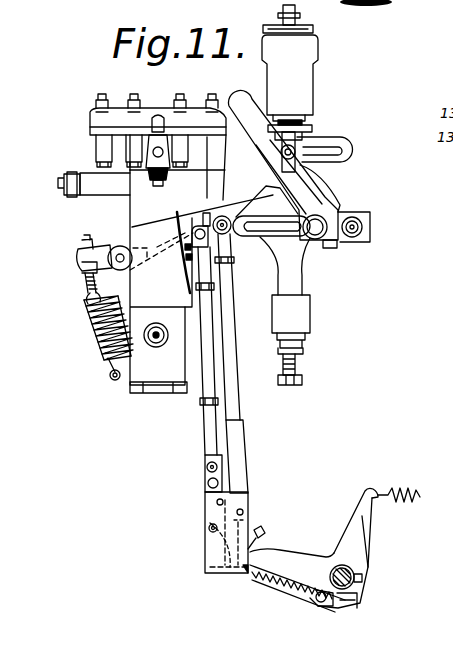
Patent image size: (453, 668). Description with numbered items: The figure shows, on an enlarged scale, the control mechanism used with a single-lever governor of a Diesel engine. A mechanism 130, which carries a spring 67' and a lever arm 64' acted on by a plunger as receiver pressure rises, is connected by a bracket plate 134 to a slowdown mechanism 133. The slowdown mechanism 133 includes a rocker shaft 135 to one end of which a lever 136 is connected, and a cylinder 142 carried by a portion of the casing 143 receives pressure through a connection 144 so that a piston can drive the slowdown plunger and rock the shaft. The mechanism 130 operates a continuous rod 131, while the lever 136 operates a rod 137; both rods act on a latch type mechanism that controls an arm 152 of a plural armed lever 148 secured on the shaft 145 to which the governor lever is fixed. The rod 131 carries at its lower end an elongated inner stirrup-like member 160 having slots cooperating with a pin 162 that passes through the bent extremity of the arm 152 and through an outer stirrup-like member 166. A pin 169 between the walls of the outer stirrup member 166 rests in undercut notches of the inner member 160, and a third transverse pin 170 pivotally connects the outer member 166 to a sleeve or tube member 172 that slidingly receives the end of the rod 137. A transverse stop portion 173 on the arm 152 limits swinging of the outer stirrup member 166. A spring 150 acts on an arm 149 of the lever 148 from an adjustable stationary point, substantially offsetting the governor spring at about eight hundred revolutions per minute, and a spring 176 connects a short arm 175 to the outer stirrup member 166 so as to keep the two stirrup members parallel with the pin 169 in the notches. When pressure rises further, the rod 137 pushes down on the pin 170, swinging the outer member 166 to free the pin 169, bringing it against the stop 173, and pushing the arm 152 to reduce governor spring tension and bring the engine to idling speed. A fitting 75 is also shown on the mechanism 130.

The mechanism 130 is at (126, 217).
The fitting 75 is at (62, 178).
The arm 64' is at (135, 249).
The spring 67' is at (91, 326).
The cylinder 142 is at (309, 72).
The connection 144 is at (288, 8).
The casing 143 is at (302, 129).
The slowdown mechanism 133 is at (338, 202).
The rocker shaft 135 is at (338, 244).
The lever 136 is at (284, 233).
The bracket plate 134 is at (272, 290).
The rod 137 is at (232, 364).
The sleeve or tube member 172 is at (245, 435).
The rod 131 is at (206, 389).
The inner stirrup-like member 160 is at (206, 472).
The outer stirrup-like member 166 is at (228, 574).
The pin 169 is at (217, 502).
The pin 162 is at (209, 529).
The transverse pin 170 is at (243, 511).
The transverse stop portion 173 is at (260, 530).
The arm 152 is at (290, 553).
The arm 149 is at (358, 518).
The spring 150 is at (400, 496).
The plural armed lever 148 is at (366, 537).
The shaft 145 is at (354, 578).
The spring 176 is at (290, 590).
The short arm 175 is at (320, 604).